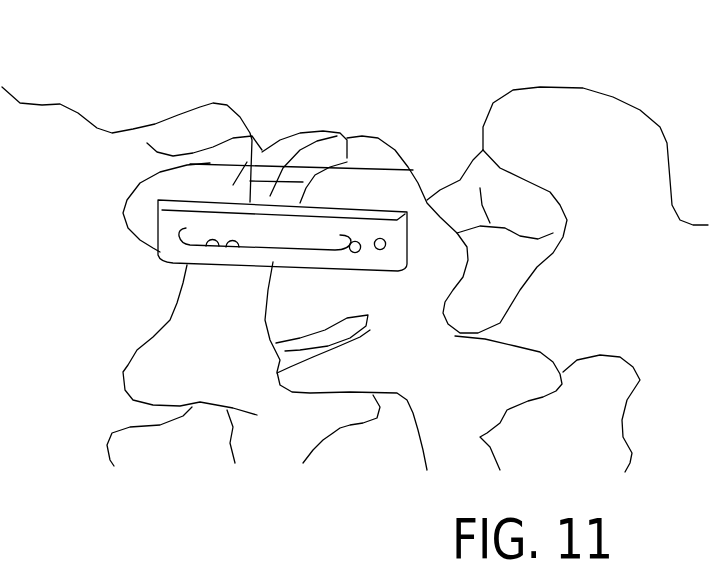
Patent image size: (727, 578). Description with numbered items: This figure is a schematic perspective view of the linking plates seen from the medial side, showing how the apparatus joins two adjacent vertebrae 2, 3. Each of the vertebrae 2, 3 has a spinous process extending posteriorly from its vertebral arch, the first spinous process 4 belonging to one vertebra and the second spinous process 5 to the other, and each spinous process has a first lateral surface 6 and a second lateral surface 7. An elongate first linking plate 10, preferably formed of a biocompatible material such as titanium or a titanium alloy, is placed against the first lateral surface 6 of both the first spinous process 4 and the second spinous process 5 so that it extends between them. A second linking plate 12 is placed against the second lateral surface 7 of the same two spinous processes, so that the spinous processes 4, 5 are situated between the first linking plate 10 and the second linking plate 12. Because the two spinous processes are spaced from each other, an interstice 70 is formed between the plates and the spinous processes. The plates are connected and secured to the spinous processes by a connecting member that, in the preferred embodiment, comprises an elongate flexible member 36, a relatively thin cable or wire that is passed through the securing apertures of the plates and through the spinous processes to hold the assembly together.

The vertebra 2 is at (452, 400).
The vertebra 3 is at (184, 390).
The first spinous process 4 is at (457, 221).
The second spinous process 5 is at (268, 144).
The first lateral surface 6 is at (304, 141).
The second lateral surface 7 is at (132, 124).
The linking plate 10 is at (293, 262).
The second linking plate 12 is at (500, 136).
The elongate flexible member 36 is at (265, 288).
The interstice 70 is at (350, 112).